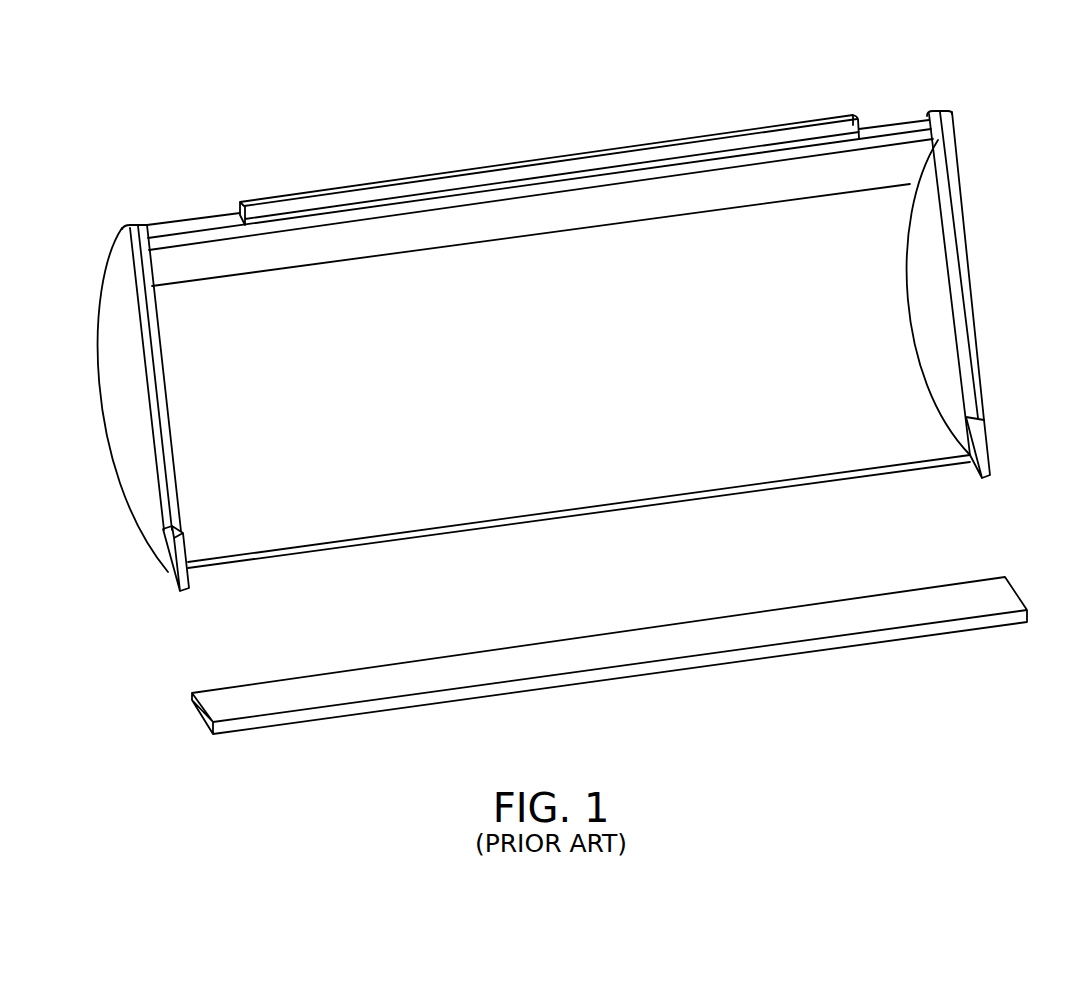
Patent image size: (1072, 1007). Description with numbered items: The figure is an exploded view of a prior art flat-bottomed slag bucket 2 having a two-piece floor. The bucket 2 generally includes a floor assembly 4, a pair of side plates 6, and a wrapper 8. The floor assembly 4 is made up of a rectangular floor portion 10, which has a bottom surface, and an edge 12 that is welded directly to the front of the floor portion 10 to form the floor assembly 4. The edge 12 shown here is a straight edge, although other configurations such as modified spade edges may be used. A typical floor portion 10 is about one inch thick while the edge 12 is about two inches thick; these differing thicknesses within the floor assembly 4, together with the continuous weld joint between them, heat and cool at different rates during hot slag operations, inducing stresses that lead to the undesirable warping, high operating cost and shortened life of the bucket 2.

The flat-bottomed slag bucket 2 is at (995, 142).
The floor assembly 4 is at (249, 580).
The side plates 6 is at (135, 488).
The wrapper 8 is at (233, 292).
The floor portion 10 is at (632, 492).
The edge 12 is at (713, 637).